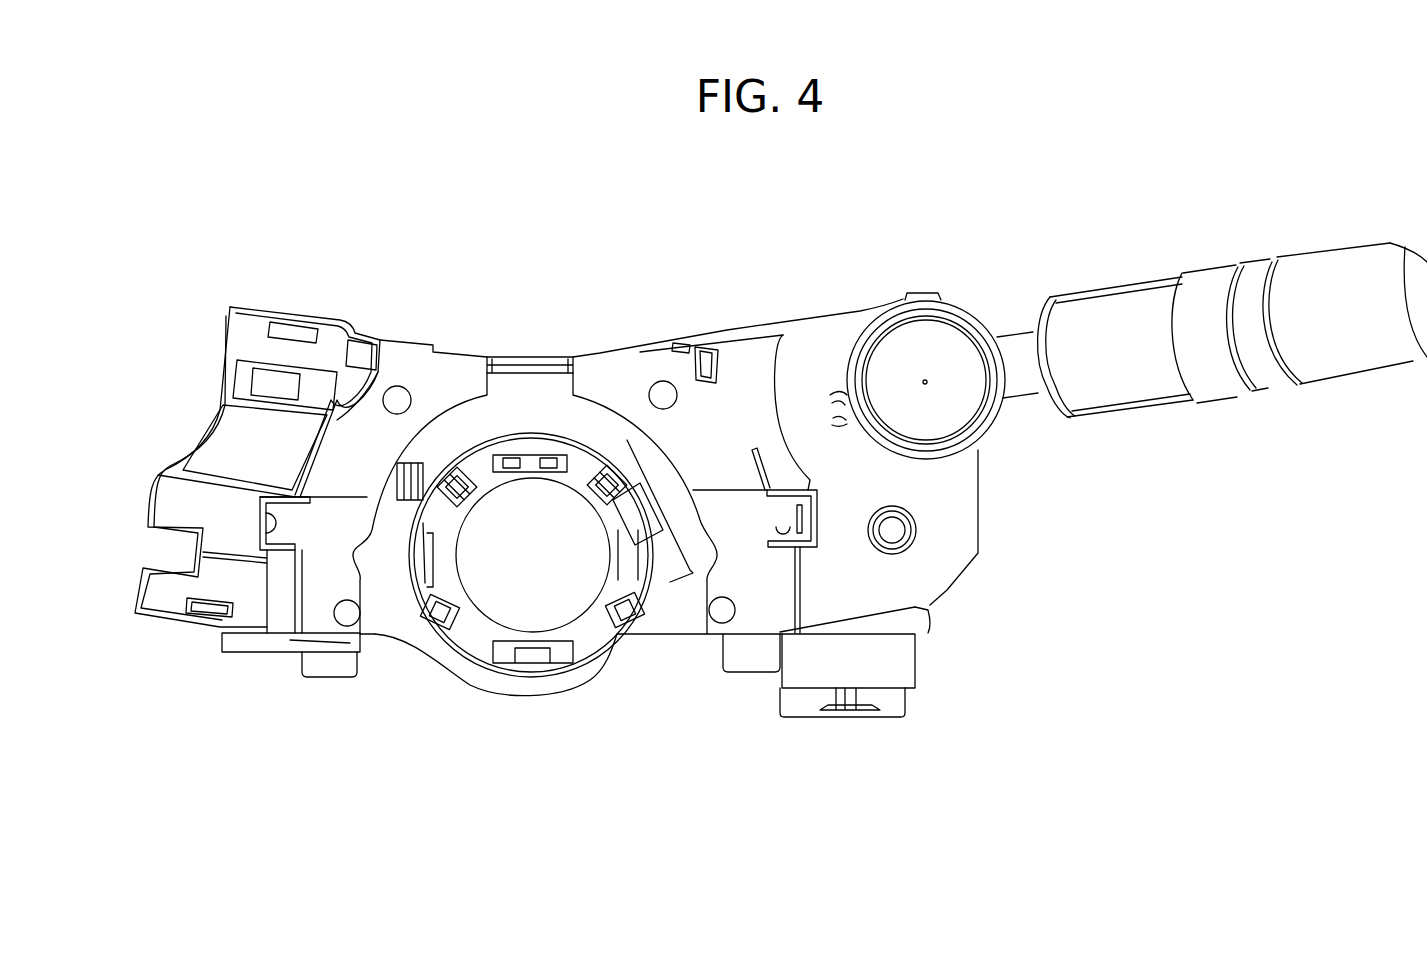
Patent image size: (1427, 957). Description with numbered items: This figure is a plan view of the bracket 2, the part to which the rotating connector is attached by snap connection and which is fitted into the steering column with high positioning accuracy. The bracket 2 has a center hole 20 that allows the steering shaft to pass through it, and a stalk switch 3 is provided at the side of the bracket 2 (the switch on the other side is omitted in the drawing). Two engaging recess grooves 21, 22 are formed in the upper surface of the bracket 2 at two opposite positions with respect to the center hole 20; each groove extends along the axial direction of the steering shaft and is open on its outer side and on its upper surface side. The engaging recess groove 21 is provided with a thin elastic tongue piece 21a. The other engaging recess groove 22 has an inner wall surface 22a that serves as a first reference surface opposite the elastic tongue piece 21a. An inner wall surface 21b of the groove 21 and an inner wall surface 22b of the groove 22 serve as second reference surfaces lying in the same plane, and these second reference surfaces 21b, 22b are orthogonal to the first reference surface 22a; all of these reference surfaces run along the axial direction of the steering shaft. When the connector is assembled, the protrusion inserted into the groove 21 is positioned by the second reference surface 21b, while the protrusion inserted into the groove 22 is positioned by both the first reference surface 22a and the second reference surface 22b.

The bracket 2 is at (462, 342).
The center hole 20 is at (548, 493).
The stalk switch 3 is at (1103, 318).
The engaging recess groove 21 is at (772, 518).
The elastic tongue piece 21a is at (800, 510).
The inner wall surface 21b is at (793, 555).
The engaging recess groove 22 is at (290, 522).
The inner wall surface 22a is at (293, 520).
The inner wall surface 22b is at (299, 560).